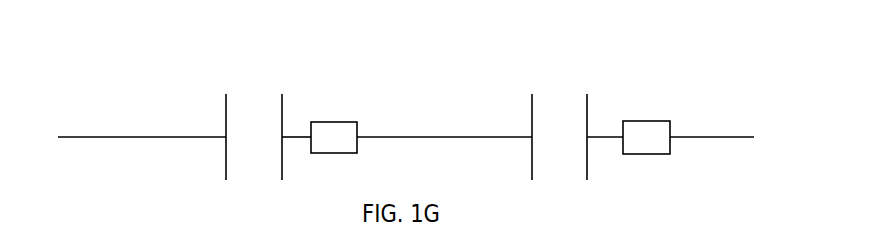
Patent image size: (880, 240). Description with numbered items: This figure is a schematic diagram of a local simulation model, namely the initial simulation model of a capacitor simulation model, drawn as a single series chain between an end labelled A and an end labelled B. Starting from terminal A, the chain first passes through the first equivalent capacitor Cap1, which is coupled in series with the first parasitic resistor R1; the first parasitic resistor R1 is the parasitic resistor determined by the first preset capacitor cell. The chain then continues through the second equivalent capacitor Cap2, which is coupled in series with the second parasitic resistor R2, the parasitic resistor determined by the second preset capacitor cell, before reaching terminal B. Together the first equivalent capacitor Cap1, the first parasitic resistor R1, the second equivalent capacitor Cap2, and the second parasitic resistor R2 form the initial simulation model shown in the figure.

The terminal A is at (141, 121).
The terminal B is at (712, 125).
The first equivalent capacitor Cap1 is at (254, 117).
The second equivalent capacitor Cap2 is at (559, 120).
The first parasitic resistor R1 is at (334, 123).
The second parasitic resistor R2 is at (646, 124).